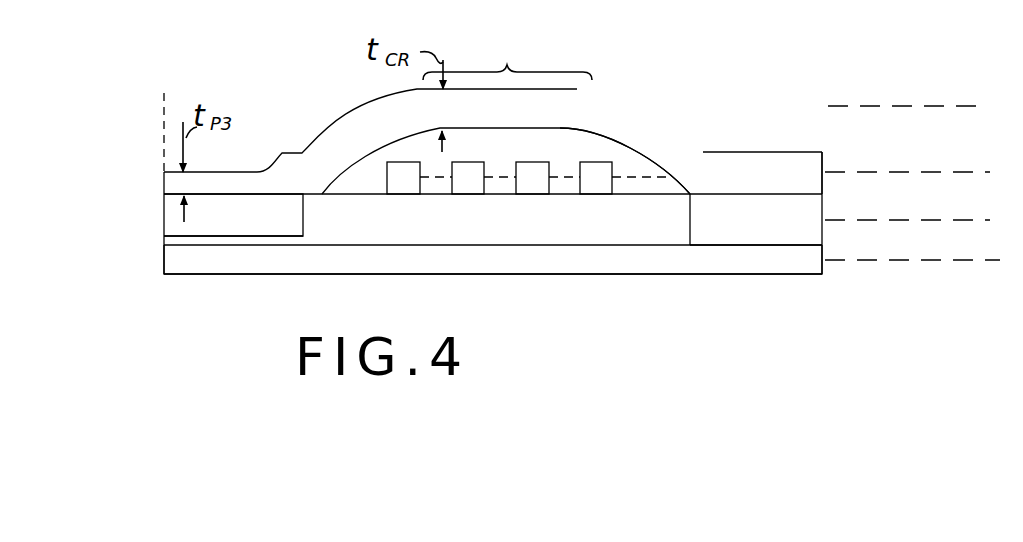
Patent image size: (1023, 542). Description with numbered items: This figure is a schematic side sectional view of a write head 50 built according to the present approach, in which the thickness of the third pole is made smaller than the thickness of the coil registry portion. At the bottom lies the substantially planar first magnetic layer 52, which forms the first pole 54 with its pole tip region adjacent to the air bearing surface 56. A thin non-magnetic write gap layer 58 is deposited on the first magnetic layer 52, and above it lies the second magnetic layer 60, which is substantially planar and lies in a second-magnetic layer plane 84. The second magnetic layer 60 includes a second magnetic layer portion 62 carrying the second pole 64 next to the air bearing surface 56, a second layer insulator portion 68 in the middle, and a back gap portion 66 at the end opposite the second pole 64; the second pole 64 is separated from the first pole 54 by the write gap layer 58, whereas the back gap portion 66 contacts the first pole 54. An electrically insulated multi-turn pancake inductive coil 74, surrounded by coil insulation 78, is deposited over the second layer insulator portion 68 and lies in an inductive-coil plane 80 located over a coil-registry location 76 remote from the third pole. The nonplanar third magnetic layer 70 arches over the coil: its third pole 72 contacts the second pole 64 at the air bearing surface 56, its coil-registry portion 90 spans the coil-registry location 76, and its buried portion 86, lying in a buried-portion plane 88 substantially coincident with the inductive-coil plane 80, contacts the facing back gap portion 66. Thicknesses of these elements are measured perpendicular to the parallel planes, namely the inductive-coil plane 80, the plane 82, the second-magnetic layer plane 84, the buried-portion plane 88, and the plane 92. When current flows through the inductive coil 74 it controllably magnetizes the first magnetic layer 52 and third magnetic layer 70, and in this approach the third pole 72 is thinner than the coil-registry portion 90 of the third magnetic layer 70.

The write head 50 is at (300, 78).
The first magnetic layer 52 is at (697, 275).
The first pole 54 is at (179, 275).
The air bearing surface 56 is at (164, 207).
The write gap layer 58 is at (164, 241).
The second magnetic layer 60 is at (304, 215).
The second magnetic layer portion 62 is at (250, 237).
The second pole 64 is at (164, 221).
The back gap portion 66 is at (822, 232).
The second layer insulator portion 68 is at (500, 235).
The third magnetic layer 70 is at (824, 158).
The third pole 72 is at (164, 183).
The inductive coil 74 is at (467, 162).
The coil-registry location 76 is at (507, 57).
The coil insulation 78 is at (507, 158).
The inductive-coil plane 80 is at (635, 180).
The parallel plane 82 is at (938, 260).
The second-magnetic layer plane 84 is at (925, 220).
The buried portion 86 is at (753, 152).
The buried-portion plane 88 is at (925, 172).
The coil-registry portion 90 is at (557, 130).
The parallel plane 92 is at (893, 105).